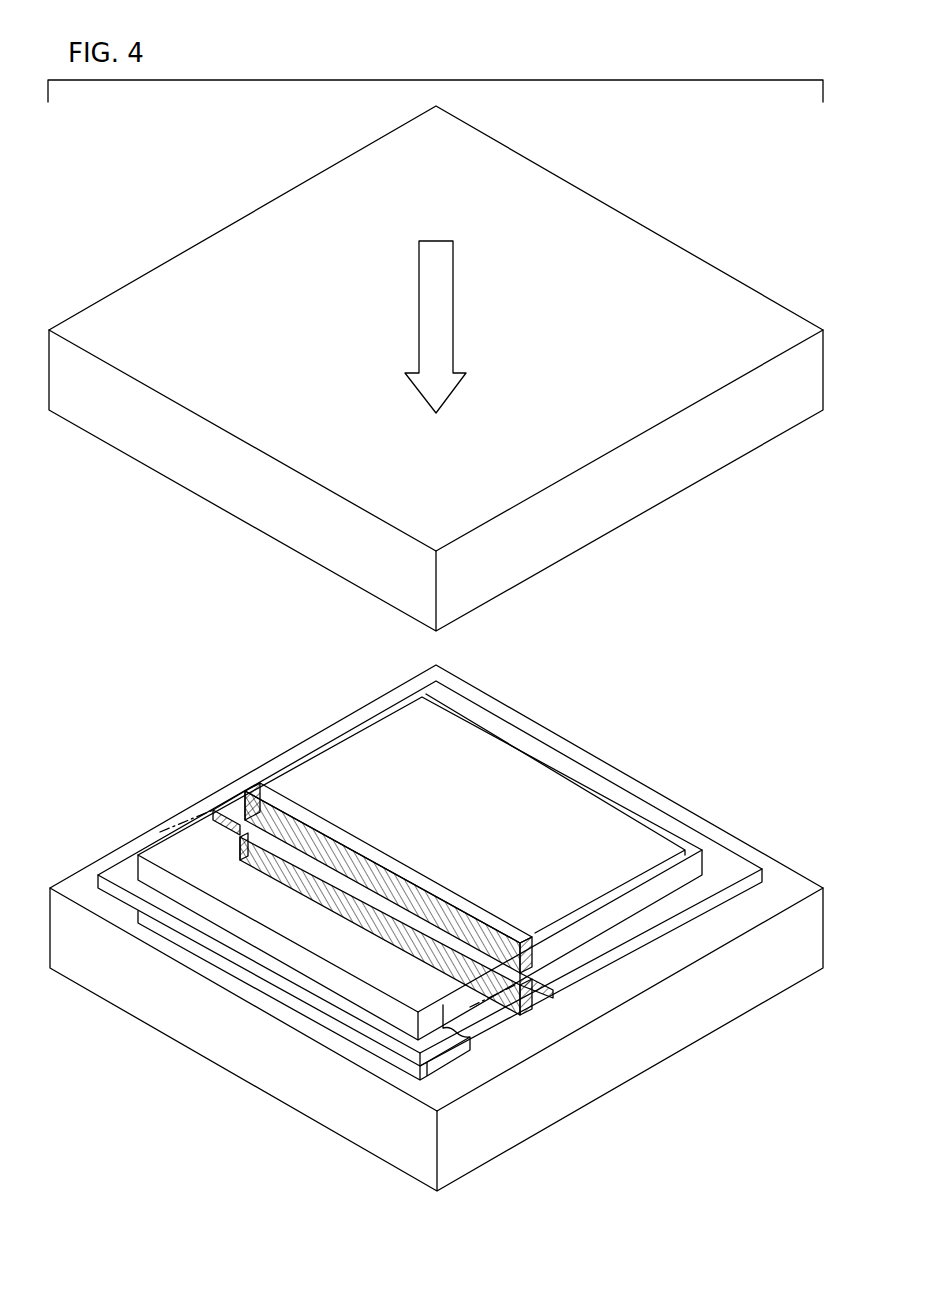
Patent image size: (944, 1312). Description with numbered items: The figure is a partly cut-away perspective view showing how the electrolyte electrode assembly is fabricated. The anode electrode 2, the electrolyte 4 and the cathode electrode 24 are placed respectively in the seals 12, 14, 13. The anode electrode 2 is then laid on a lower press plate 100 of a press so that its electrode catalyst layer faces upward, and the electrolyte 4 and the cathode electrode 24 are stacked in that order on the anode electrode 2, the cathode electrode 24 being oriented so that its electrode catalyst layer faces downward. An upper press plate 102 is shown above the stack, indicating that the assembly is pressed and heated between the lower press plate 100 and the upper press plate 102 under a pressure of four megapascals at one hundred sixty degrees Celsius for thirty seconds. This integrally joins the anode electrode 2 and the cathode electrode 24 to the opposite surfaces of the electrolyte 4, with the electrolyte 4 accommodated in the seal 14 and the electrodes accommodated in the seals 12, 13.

The upper press plate 102 is at (631, 243).
The lower press plate 100 is at (538, 1108).
The seal 14 is at (742, 868).
The seal 13 is at (693, 848).
The cathode electrode 24 is at (593, 828).
The seal 12 is at (375, 1050).
The electrolyte 4 is at (395, 895).
The anode electrode 2 is at (417, 942).